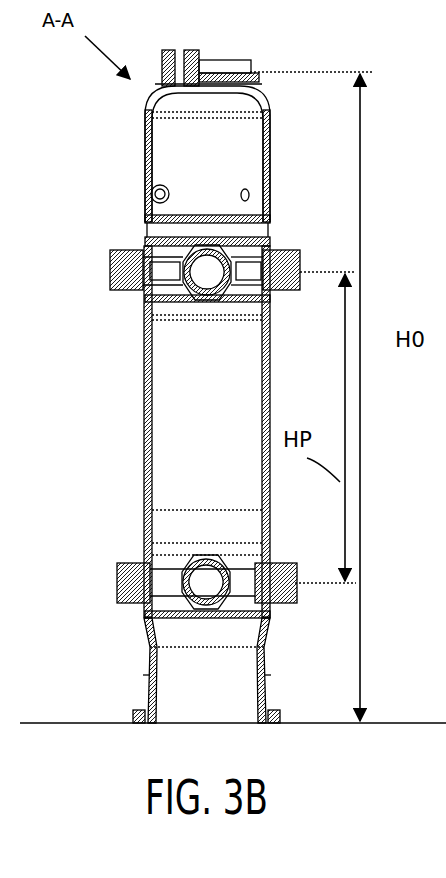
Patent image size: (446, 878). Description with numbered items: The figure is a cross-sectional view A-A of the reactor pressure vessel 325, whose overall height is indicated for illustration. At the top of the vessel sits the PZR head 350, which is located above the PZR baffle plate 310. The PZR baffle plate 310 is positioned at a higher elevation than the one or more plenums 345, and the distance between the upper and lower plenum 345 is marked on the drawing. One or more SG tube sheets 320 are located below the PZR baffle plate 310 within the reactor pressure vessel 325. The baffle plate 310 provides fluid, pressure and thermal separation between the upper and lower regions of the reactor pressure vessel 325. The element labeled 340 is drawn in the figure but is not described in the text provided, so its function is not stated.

The PZR baffle plate 310 is at (200, 215).
The SG tube sheet 320 is at (165, 280).
The reactor pressure vessel 325 is at (143, 437).
The flange block 340 is at (280, 285).
The plenum 345 is at (252, 255).
The PZR head 350 is at (140, 165).